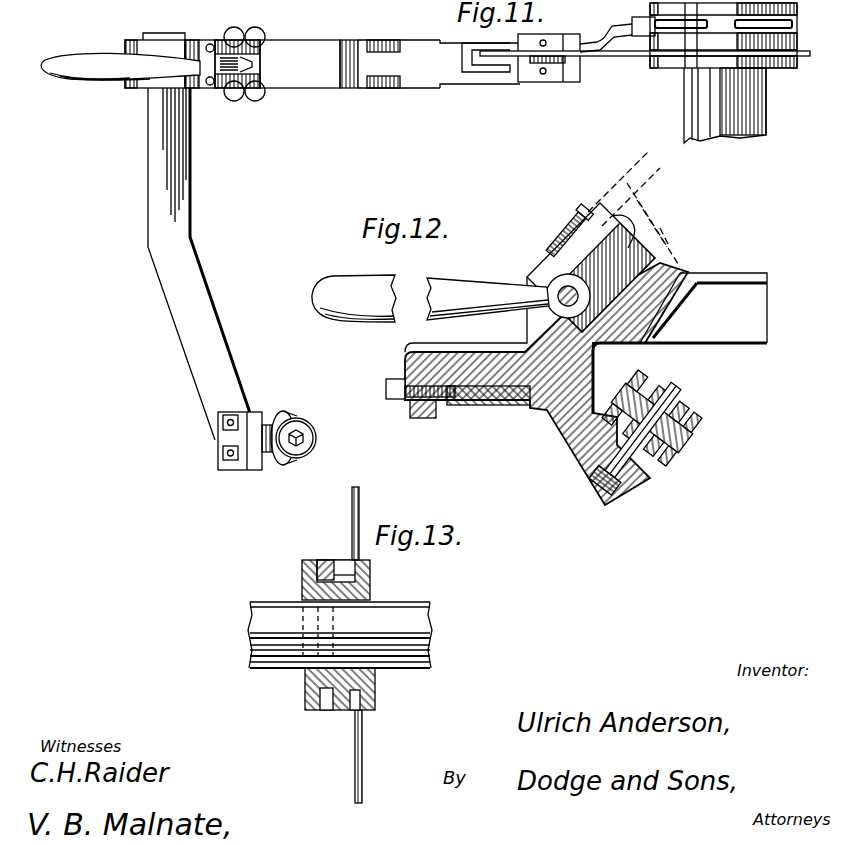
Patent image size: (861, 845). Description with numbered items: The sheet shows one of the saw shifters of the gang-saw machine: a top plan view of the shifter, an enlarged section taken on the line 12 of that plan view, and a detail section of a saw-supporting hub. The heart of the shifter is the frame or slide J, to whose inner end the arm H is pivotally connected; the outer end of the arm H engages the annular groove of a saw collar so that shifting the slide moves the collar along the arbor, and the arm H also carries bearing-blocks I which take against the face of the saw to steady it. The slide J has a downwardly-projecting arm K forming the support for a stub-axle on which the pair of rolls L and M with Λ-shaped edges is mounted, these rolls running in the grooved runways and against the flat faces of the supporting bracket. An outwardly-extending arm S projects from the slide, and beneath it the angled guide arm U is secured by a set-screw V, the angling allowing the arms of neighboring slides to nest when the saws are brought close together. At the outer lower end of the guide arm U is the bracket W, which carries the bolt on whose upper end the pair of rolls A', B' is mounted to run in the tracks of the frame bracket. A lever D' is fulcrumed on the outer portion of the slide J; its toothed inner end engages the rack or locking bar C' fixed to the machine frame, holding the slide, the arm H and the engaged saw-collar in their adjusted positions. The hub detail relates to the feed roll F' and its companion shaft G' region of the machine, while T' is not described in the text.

In FIG. 11, the section line 12 is at (322, 63).
In FIG. 11, the lever D' is at (120, 82).
In FIG. 12, the lever D' is at (451, 285).
In FIG. 11, the slide J is at (157, 80).
In FIG. 12, the slide J is at (720, 337).
In FIG. 11, the bearing-blocks I is at (543, 62).
In FIG. 11, the arm H is at (630, 20).
In FIG. 13, the arm H is at (328, 560).
In FIG. 11, the guide arm U is at (177, 255).
In FIG. 12, the guide arm U is at (513, 400).
In FIG. 11, the bracket W is at (250, 412).
In FIG. 11, the roll A' is at (285, 454).
In FIG. 11, the roll B' is at (310, 453).
In FIG. 12, the rack-bar C' is at (634, 209).
In FIG. 12, the set-screw V is at (392, 380).
In FIG. 12, the plate T' is at (433, 426).
In FIG. 12, the arm S is at (493, 372).
In FIG. 12, the arm K is at (562, 420).
In FIG. 12, the roll M is at (703, 442).
In FIG. 12, the roll L is at (670, 463).
In FIG. 13, the shaft G' is at (318, 580).
In FIG. 13, the feed roll F' is at (350, 629).